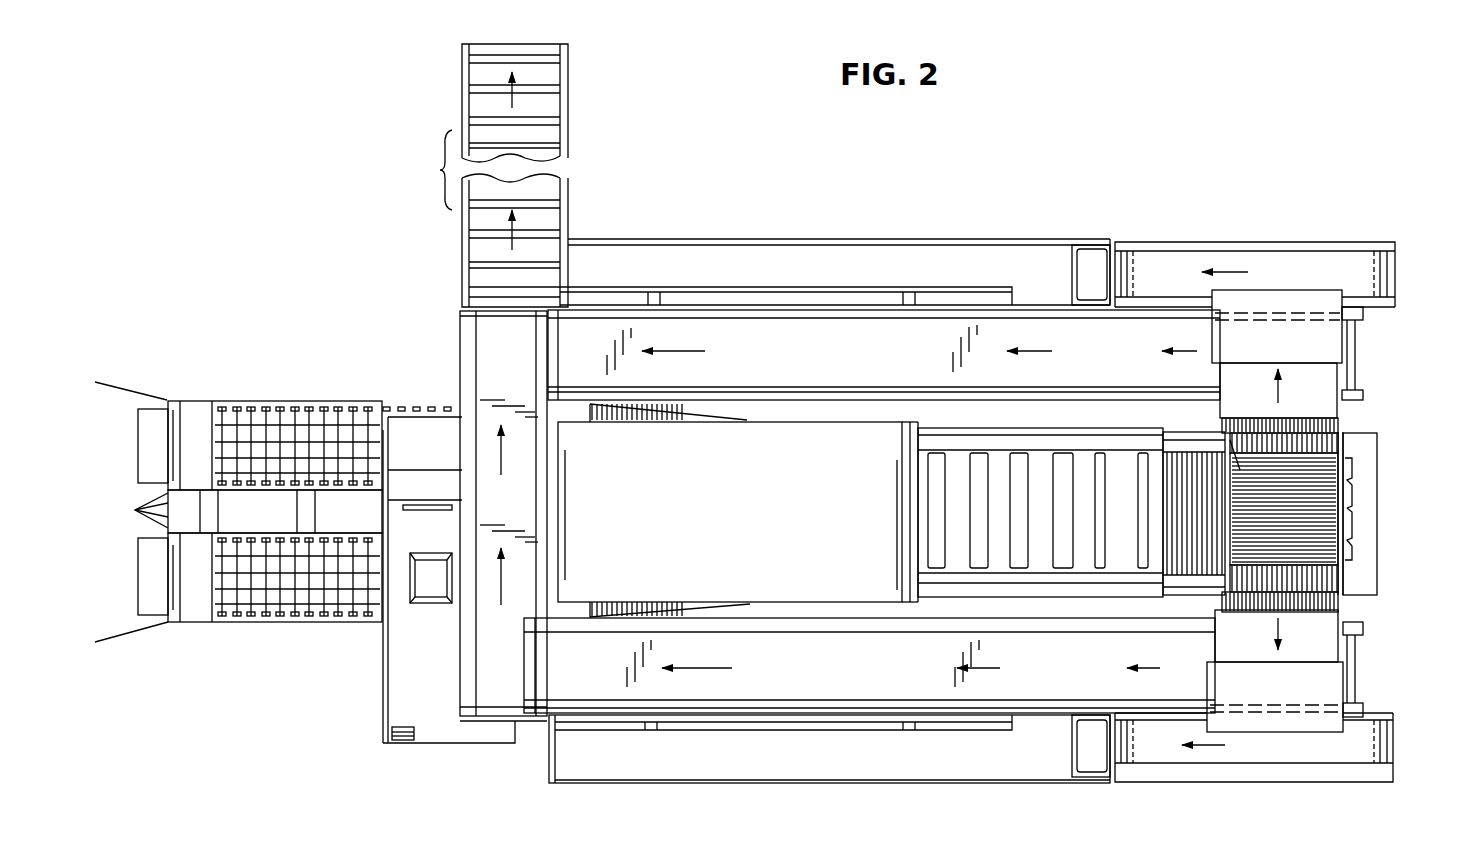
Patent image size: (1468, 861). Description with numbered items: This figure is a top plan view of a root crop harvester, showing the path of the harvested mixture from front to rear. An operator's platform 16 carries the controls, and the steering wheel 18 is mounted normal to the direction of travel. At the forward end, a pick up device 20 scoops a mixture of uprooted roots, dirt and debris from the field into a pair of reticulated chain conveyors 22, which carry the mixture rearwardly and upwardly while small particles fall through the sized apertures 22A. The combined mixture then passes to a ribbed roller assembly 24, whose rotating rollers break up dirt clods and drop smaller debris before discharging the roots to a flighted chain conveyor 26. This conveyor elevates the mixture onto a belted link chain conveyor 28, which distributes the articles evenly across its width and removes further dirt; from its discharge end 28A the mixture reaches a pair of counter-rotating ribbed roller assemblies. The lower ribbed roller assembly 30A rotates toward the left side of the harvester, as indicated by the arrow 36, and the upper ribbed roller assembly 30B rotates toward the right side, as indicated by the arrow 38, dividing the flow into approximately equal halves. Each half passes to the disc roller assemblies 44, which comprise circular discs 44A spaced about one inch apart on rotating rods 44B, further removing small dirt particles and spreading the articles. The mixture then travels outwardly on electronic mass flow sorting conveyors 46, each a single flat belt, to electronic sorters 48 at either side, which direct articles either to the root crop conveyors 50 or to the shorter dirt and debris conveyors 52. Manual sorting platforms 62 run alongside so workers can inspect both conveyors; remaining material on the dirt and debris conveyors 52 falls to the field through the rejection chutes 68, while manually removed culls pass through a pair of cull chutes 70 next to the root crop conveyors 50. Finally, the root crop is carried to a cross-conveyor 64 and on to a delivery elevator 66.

The operator's platform 16 is at (397, 658).
The steering wheel 18 is at (410, 509).
The pick up device 20 is at (125, 657).
The reticulated chain conveyors 22 is at (297, 402).
The sized apertures 22A is at (232, 425).
The ribbed roller assembly 24 is at (655, 418).
The flighted chain conveyor 26 is at (1015, 468).
The belted link chain conveyor 28 is at (1200, 440).
The discharge end 28A is at (1237, 470).
The lower ribbed roller assembly 30A is at (1358, 533).
The upper ribbed roller assembly 30B is at (1358, 482).
The arrow 36 is at (1397, 560).
The arrow 38 is at (1397, 500).
The disc roller assemblies 44 is at (1212, 425).
The circular discs 44A is at (1322, 420).
The rotating rods 44B is at (1338, 425).
The electronic mass flow sorting conveyors 46 is at (1328, 378).
The electronic sorters 48 is at (1330, 346).
The root crop conveyors 50 is at (864, 367).
The dirt and debris conveyors 52 is at (1308, 285).
The manual sorting platforms 62 is at (848, 244).
The cross-conveyor 64 is at (520, 510).
The delivery elevator 66 is at (548, 217).
The rejection chutes 68 is at (1095, 262).
The cull chutes 70 is at (932, 292).